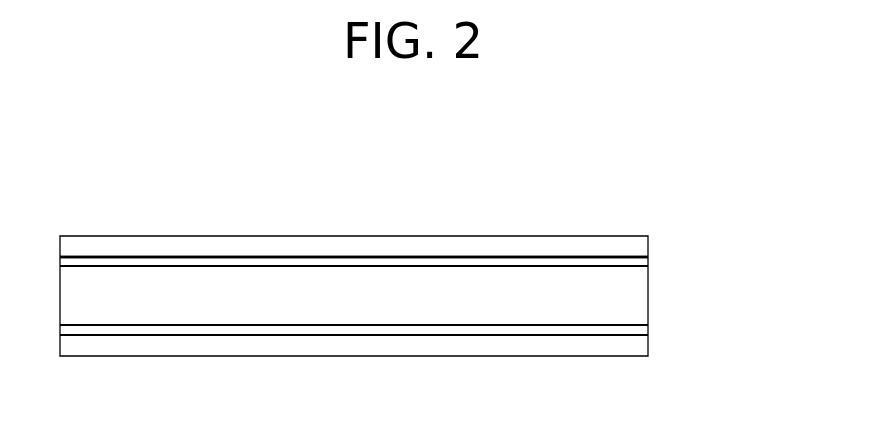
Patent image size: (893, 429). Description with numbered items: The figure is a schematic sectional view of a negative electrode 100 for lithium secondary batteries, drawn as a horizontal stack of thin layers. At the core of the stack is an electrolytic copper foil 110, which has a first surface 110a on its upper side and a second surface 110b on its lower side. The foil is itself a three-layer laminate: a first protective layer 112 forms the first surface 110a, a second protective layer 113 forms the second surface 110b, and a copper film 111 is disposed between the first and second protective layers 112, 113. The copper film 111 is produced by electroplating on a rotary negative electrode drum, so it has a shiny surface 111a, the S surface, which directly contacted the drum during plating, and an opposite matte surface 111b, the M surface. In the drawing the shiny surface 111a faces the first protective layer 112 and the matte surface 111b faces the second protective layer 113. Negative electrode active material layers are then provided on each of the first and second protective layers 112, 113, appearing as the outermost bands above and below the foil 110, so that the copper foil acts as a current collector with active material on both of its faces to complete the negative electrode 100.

The negative electrode 100 is at (399, 130).
The electrolytic copper foil 110 is at (411, 297).
The copper film 111 is at (638, 295).
The first protective layer 112 is at (638, 262).
The second protective layer 113 is at (638, 328).
The first surface 110a is at (144, 256).
The second surface 110b is at (143, 335).
The shiny surface 111a is at (253, 266).
The matte surface 111b is at (253, 325).